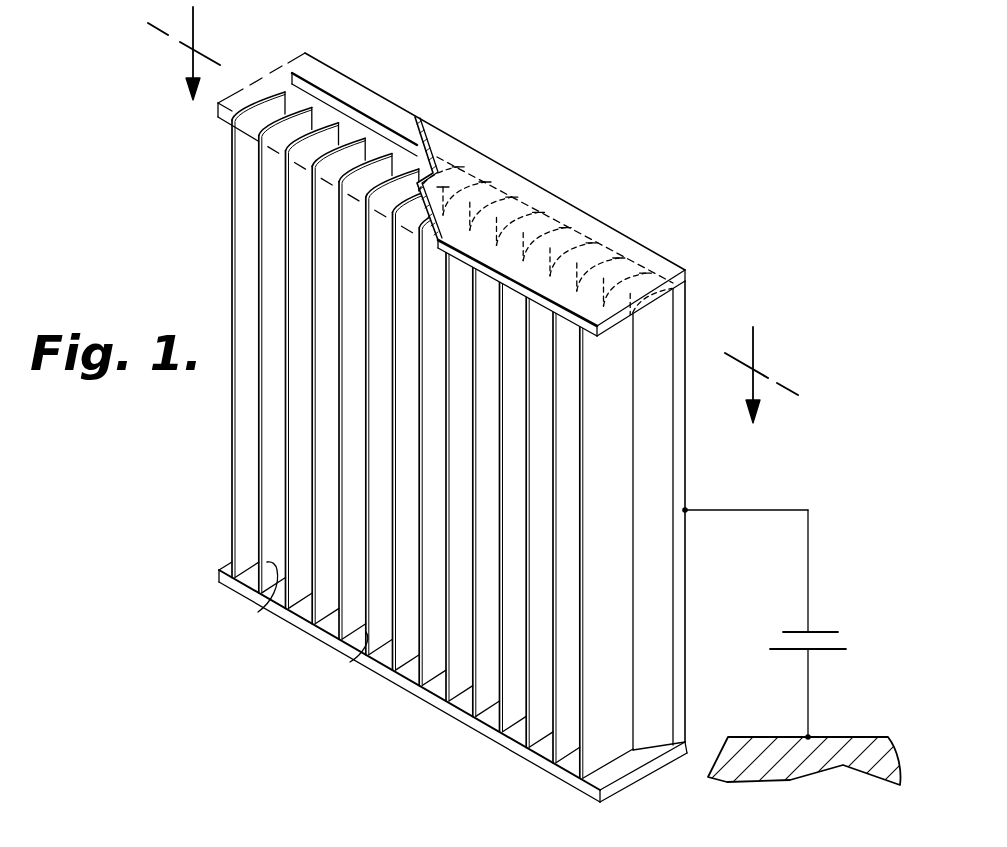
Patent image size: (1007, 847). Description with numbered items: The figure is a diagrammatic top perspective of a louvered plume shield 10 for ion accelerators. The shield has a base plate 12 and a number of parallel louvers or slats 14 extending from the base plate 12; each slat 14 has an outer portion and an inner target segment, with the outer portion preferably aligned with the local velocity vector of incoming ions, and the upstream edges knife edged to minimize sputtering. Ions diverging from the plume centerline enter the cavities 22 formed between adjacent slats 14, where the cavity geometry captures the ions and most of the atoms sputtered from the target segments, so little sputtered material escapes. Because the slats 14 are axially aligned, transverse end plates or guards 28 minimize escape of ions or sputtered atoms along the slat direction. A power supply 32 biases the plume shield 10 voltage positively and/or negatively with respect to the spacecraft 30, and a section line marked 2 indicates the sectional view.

The section line 2- 2 is at (473, 211).
The louvered plume shield 10 is at (642, 234).
The base plate 12 is at (678, 445).
The slats 14 is at (241, 557).
The cavities 22 is at (366, 632).
The transverse end plates or guards 28 is at (523, 213).
The spacecraft 30 is at (767, 745).
The power supply 32 is at (787, 620).